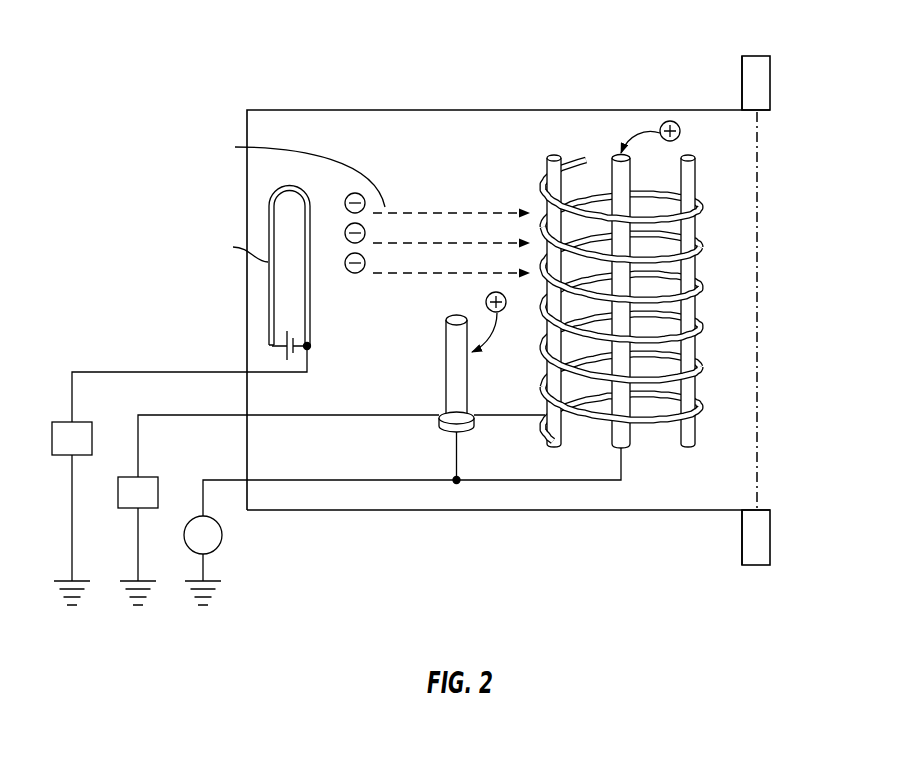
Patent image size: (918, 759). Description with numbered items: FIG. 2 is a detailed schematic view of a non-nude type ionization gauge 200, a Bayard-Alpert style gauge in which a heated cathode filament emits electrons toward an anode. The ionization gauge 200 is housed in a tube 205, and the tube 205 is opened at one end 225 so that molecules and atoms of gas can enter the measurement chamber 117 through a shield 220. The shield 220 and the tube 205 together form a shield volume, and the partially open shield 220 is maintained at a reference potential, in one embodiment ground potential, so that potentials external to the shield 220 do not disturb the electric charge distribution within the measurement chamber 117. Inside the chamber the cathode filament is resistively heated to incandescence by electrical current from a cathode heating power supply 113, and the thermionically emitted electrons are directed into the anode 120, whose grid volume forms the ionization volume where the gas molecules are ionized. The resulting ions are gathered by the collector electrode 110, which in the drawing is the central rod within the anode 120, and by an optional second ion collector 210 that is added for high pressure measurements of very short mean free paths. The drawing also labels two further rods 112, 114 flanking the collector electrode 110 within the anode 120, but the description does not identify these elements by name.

The ionization gauge 200 is at (176, 80).
The tube 205 is at (347, 510).
The second ion collector 210 is at (457, 316).
The collector rod 112 is at (553, 156).
The collector electrode 110 is at (615, 156).
The collector rod 114 is at (688, 156).
The anode 120 is at (665, 284).
The open end 225 is at (768, 258).
The shield 220 is at (757, 363).
The cathode heating power supply 113 is at (283, 355).
The measurement chamber 117 is at (488, 397).